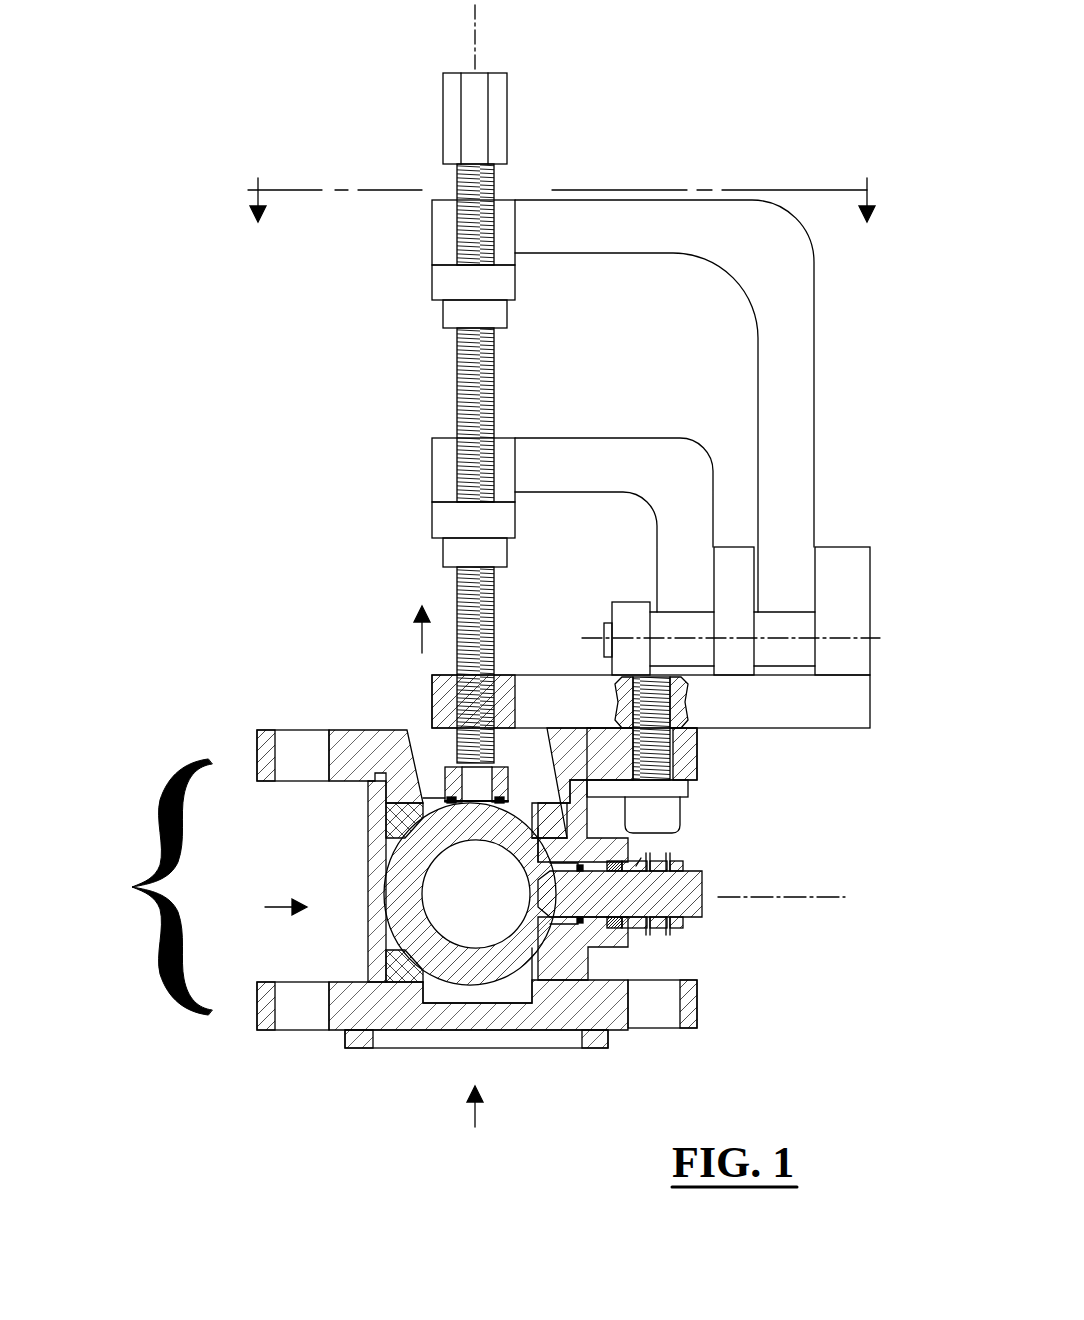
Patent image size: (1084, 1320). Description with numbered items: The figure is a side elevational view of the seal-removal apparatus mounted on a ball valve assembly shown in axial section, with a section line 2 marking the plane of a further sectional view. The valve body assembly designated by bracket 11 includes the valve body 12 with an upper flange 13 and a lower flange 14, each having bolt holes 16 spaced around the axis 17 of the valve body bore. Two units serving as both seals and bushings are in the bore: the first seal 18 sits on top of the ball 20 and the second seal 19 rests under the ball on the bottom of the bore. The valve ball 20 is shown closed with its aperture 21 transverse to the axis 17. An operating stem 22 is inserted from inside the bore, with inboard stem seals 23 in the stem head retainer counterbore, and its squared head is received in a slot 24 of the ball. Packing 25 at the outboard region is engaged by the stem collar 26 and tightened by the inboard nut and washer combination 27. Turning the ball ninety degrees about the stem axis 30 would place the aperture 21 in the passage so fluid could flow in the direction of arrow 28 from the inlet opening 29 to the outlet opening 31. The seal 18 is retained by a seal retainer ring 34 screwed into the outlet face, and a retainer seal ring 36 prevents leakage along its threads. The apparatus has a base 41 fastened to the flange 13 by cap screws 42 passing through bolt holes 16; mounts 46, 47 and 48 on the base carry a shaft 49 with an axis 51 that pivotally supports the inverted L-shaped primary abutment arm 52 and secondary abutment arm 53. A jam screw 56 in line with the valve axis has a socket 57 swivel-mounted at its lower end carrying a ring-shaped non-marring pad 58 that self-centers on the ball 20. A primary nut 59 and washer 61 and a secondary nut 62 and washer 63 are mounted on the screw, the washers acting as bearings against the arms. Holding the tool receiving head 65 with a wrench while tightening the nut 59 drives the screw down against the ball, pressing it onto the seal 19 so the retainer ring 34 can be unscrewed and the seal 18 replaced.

The section line 2 is at (561, 188).
The bracket 11 is at (154, 887).
The valve body 12 is at (267, 907).
The upper flange 13 is at (268, 757).
The lower flange 14 is at (273, 1012).
The bolt holes 16 is at (312, 745).
The axis 17 is at (481, 45).
The first seal 18 is at (402, 822).
The second seal 19 is at (407, 970).
The valve ball 20 is at (480, 968).
The aperture 21 is at (468, 907).
The operating stem 22 is at (697, 908).
The inboard stem seals 23 is at (581, 924).
The slot 24 is at (548, 930).
The packing 25 is at (615, 924).
The stem collar 26 is at (637, 864).
The inboard nut and washer combination 27 is at (683, 862).
The flow direction arrow 28 is at (405, 618).
The inlet opening 29 is at (541, 1043).
The stem axis 30 is at (802, 897).
The outlet opening 31 is at (420, 742).
The seal retainer ring 34 is at (388, 750).
The retainer seal ring 36 is at (383, 782).
The base 41 is at (838, 710).
The cap screws 42 is at (680, 815).
The mount 46 is at (840, 563).
The mount 47 is at (632, 617).
The mount 48 is at (733, 558).
The shaft 49 is at (598, 637).
The shaft axis 51 is at (877, 638).
The primary abutment arm 52 is at (640, 250).
The secondary abutment arm 53 is at (580, 458).
The jam screw 56 is at (476, 387).
The socket 57 is at (458, 778).
The pad 58 is at (498, 800).
The primary nut 59 is at (457, 317).
The primary washer 61 is at (452, 294).
The secondary nut 62 is at (455, 555).
The secondary washer 63 is at (450, 522).
The tool receiving head 65 is at (510, 118).